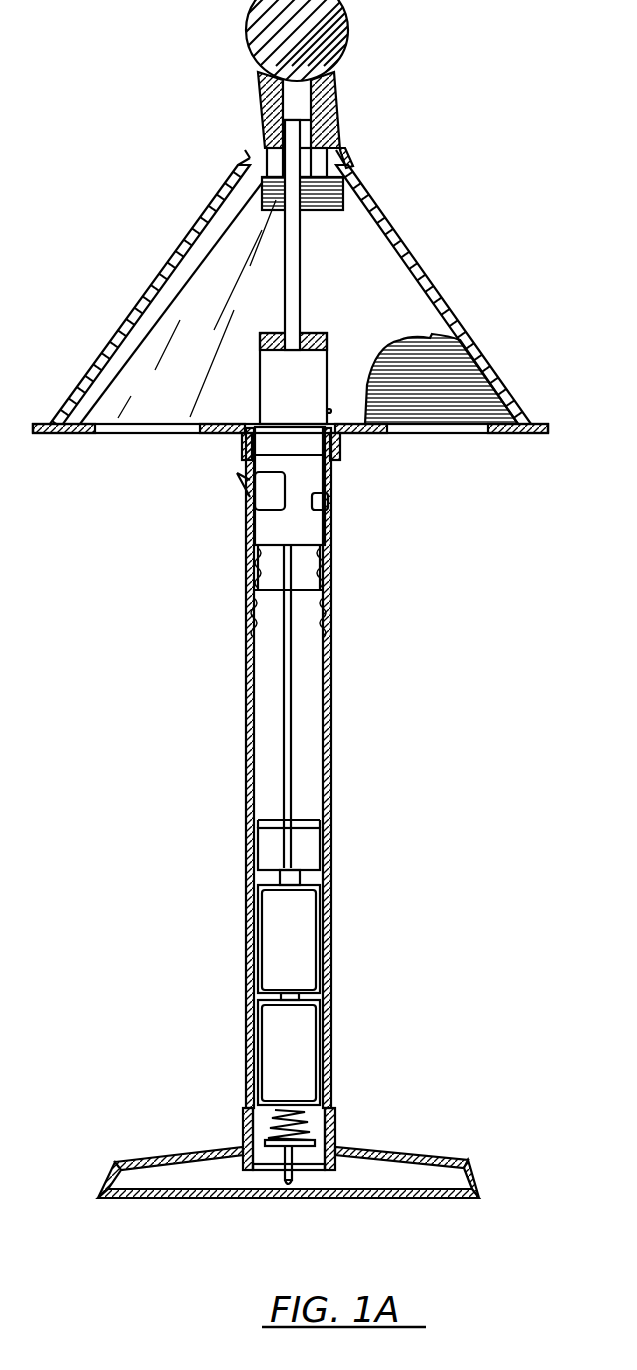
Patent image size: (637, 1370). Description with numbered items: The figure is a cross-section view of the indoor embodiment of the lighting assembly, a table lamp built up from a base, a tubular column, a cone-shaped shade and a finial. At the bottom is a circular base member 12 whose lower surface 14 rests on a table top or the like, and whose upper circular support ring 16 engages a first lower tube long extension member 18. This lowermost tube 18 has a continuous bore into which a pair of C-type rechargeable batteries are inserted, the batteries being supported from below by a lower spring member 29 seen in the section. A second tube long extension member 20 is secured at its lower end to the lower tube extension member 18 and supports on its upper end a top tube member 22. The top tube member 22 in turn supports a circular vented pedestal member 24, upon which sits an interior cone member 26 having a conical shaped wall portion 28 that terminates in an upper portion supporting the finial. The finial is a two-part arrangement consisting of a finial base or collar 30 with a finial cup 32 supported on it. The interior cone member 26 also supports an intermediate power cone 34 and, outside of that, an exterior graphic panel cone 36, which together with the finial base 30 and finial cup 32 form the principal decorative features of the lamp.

The circular base member 12 is at (457, 1158).
The lower surface 14 is at (152, 1204).
The upper circular support ring 16 is at (240, 1126).
The first lower tube long extension member 18 is at (332, 967).
The second tube long extension member 20 is at (243, 742).
The top tube member 22 is at (332, 481).
The circular vented pedestal member 24 is at (120, 437).
The interior cone member 26 is at (397, 240).
The conical shaped wall portion 28 is at (178, 283).
The lower spring member 29 is at (337, 1113).
The finial base 30 is at (267, 107).
The finial cup 32 is at (263, 62).
The intermediate power cone 34 is at (196, 248).
The exterior graphic panel cone 36 is at (367, 202).